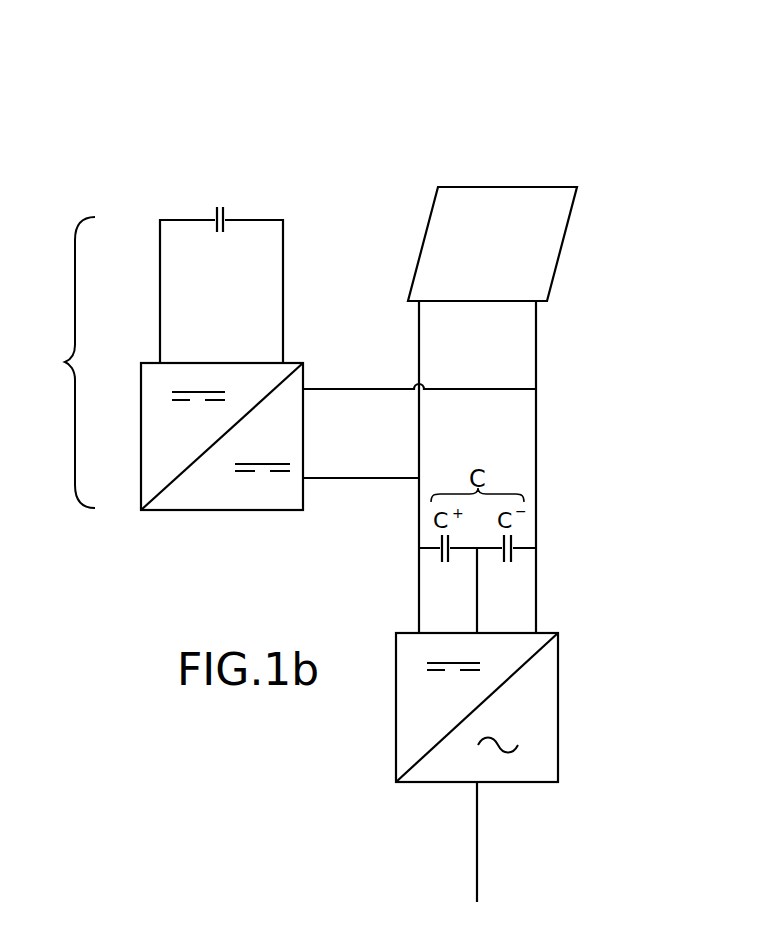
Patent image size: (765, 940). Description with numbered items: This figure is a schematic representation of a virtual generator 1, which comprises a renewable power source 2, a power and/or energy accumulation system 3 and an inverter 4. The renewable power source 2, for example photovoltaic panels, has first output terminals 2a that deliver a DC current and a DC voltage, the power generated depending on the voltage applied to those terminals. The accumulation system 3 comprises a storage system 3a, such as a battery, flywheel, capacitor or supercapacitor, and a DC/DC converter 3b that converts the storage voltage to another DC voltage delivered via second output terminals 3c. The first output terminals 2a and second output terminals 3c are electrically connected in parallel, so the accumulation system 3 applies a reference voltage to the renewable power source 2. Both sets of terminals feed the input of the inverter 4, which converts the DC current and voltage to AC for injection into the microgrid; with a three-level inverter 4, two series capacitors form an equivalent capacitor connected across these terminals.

The virtual generator 1 is at (119, 100).
The renewable power source 2 is at (553, 223).
The first output terminals 2a is at (419, 343).
The power and/or energy accumulation system 3 is at (66, 362).
The storage system 3a is at (180, 240).
The DC/DC converter 3b is at (148, 486).
The second output terminals 3c is at (387, 478).
The inverter 4 is at (558, 733).